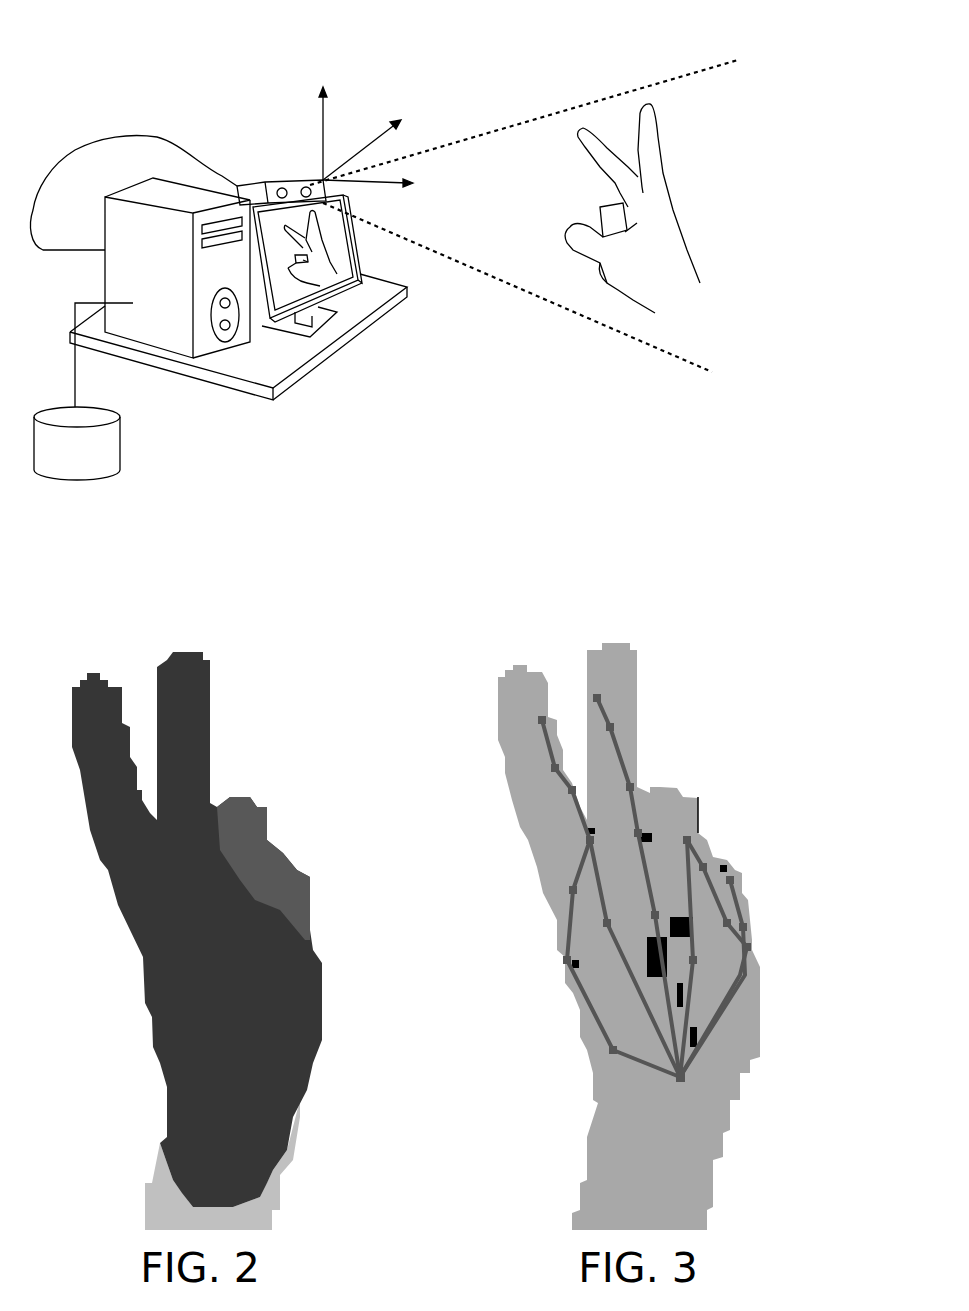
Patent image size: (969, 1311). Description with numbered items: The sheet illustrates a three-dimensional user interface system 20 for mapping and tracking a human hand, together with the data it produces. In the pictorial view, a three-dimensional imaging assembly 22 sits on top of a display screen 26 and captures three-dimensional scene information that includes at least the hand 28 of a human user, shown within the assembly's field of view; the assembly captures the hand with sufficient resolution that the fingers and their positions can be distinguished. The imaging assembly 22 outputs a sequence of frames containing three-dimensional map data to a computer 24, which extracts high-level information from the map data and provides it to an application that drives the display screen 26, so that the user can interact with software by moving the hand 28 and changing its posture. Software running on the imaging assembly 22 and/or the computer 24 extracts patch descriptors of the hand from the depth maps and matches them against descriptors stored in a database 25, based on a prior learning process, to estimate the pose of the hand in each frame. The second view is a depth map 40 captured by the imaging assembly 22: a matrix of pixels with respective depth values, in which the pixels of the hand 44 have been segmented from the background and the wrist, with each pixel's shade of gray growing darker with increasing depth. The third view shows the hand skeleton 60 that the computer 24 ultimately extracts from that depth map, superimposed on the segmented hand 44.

In FIG. 1, the 3D user interface system 20 is at (190, 63).
In FIG. 1, the 3D imaging assembly 22 is at (297, 183).
In FIG. 1, the computer 24 is at (155, 340).
In FIG. 1, the database 25 is at (80, 482).
In FIG. 1, the display screen 26 is at (357, 283).
In FIG. 1, the hand 28 is at (685, 250).
In FIG. 2, the depth map 40 is at (115, 1161).
In FIG. 2, the hand 44 is at (157, 1018).
In FIG. 3, the hand 44 is at (587, 1148).
In FIG. 3, the hand skeleton 60 is at (572, 915).